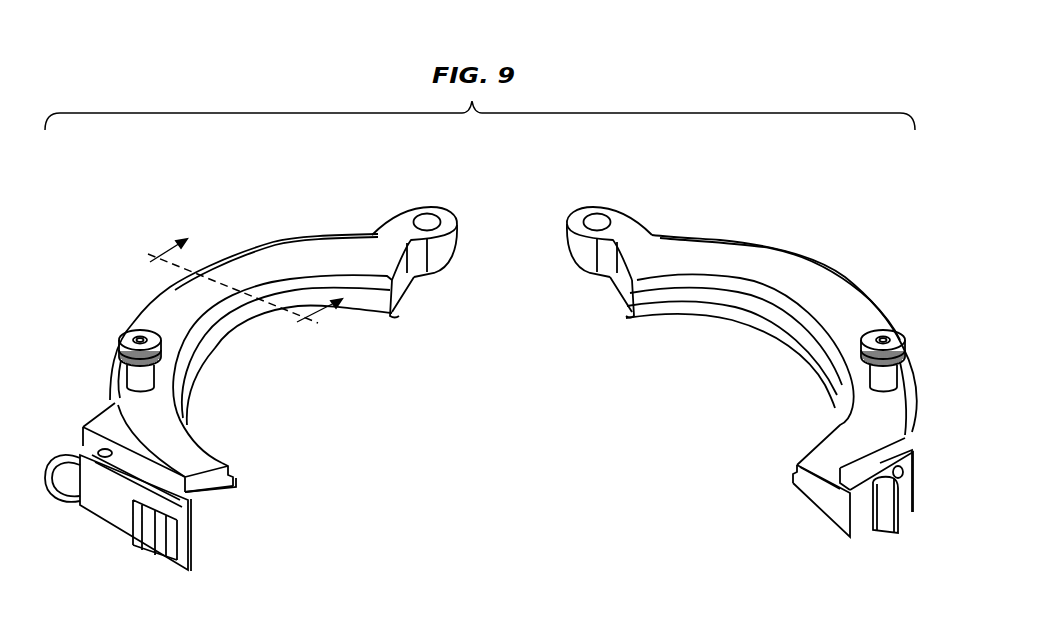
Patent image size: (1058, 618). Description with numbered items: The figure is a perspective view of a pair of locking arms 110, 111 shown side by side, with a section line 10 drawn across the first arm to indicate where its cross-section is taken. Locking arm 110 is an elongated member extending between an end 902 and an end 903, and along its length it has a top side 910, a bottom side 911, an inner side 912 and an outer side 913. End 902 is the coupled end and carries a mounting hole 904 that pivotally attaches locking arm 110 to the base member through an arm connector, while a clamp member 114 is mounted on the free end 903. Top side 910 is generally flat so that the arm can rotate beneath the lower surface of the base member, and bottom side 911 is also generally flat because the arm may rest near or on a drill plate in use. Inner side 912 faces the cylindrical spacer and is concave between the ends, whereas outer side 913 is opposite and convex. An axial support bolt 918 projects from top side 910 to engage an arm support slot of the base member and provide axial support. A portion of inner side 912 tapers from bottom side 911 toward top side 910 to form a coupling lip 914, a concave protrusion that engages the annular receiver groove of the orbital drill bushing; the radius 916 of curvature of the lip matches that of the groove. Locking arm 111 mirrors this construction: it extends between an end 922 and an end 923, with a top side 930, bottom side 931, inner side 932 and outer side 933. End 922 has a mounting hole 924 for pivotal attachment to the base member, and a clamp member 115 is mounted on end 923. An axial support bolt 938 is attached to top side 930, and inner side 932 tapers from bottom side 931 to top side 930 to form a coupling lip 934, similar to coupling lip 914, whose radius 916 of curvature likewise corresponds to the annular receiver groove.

The locking arm 110 is at (193, 207).
The locking arm 111 is at (797, 197).
The section line 10- 10 is at (227, 292).
The clamp member 114 is at (110, 515).
The clamp member 115 is at (905, 498).
The end 902 is at (415, 284).
The end 903 is at (200, 512).
The mounting hole 904 is at (427, 215).
The top side 910 is at (305, 248).
The bottom side 911 is at (228, 498).
The inner side 912 is at (223, 313).
The outer side 913 is at (134, 305).
The coupling lip 914 is at (236, 474).
The radius of curvature 916 is at (323, 407).
The axial support bolt 918 is at (133, 380).
The end 922 is at (612, 280).
The end 923 is at (838, 512).
The mounting hole 924 is at (597, 215).
The top side 930 is at (822, 264).
The bottom side 931 is at (800, 490).
The inner side 932 is at (705, 295).
The outer side 933 is at (920, 378).
The coupling lip 934 is at (790, 476).
The axial support bolt 938 is at (890, 330).